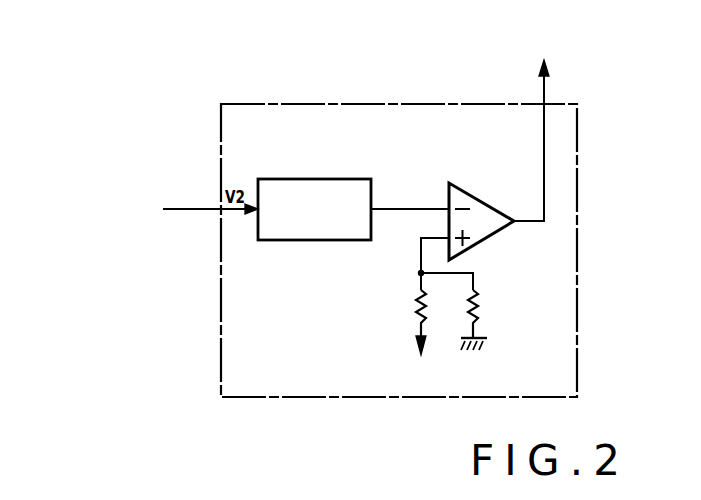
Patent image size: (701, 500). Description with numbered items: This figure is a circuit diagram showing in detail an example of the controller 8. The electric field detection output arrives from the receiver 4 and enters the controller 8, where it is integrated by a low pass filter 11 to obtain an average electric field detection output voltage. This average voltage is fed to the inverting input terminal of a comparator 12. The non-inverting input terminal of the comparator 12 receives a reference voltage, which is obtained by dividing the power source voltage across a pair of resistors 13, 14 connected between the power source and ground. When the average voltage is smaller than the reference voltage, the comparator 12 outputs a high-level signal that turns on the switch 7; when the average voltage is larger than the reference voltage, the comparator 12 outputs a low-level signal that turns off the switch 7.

The receiver 4 is at (145, 210).
The switch 7 is at (544, 128).
The controller 8 is at (254, 104).
The low pass filter 11 is at (358, 178).
The comparator 12 is at (493, 208).
The resistor 13 is at (413, 300).
The resistor 14 is at (483, 300).